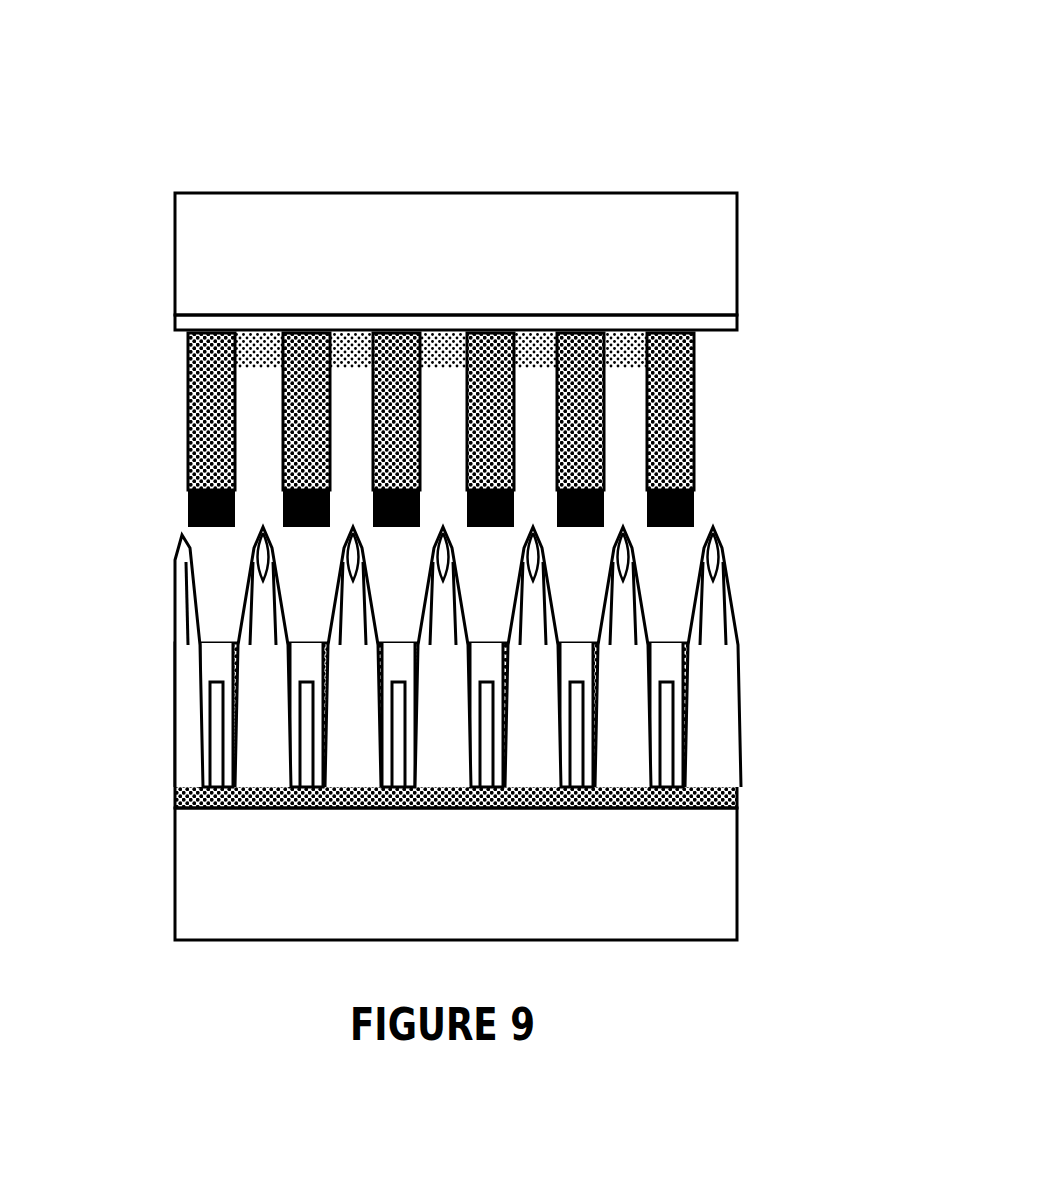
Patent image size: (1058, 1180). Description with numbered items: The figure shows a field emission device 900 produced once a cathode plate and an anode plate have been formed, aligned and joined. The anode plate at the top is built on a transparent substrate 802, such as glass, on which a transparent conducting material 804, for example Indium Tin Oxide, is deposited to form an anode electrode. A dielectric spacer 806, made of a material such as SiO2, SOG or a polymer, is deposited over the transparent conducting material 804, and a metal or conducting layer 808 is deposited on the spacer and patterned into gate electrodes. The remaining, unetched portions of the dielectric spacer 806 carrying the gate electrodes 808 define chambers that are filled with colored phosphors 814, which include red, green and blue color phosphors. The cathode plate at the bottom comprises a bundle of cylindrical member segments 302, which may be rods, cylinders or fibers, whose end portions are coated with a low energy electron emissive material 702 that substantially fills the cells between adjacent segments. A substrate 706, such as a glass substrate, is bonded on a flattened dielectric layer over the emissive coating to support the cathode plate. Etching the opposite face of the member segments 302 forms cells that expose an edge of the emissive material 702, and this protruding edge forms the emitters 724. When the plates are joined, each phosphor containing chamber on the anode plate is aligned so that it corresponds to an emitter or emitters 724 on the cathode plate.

The field emission device 900 is at (742, 133).
The transparent substrate 802 is at (737, 277).
The transparent conducting material 804 is at (176, 318).
The phosphors 814 is at (432, 338).
The dielectric spacer 806 is at (577, 427).
The conducting layer 808 is at (690, 505).
The emitters 724 is at (547, 575).
The cylindrical member segments 302 is at (397, 563).
The low energy electron emissive material 702 is at (180, 620).
The substrate 706 is at (737, 868).